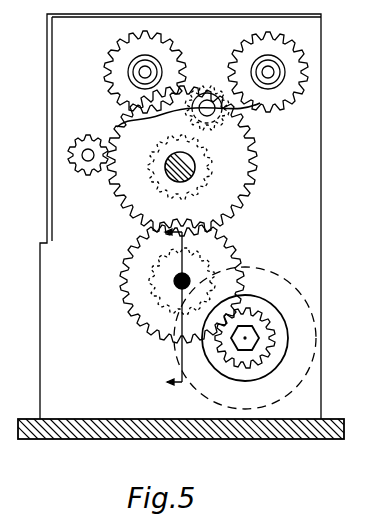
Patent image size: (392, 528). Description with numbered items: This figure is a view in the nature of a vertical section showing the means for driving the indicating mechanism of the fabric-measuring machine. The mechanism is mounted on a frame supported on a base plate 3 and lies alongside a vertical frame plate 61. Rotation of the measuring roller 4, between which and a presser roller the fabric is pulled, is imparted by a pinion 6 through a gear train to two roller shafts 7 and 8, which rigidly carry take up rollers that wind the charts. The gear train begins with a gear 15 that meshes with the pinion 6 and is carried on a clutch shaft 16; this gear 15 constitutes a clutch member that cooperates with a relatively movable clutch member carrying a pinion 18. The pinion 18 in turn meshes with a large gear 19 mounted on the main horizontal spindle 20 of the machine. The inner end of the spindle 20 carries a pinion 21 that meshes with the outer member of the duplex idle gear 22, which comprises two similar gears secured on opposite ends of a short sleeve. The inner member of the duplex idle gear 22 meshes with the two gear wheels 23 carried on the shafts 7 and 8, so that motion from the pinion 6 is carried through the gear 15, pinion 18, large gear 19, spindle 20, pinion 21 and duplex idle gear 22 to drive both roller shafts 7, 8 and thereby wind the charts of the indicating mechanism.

The base plate 3 is at (344, 431).
The measuring roller 4 is at (309, 360).
The pinion 6 is at (258, 338).
The roller shaft 7 is at (143, 72).
The roller shaft 8 is at (268, 72).
The gear 15 is at (228, 256).
The clutch shaft 16 is at (174, 290).
The pinion 18 is at (233, 240).
The large gear 19 is at (239, 189).
The main horizontal spindle 20 is at (190, 172).
The pinion 21 is at (152, 177).
The duplex idle gear 22 is at (206, 88).
The gear wheels 23 is at (339, 48).
The vertical frame plate 61 is at (311, 142).